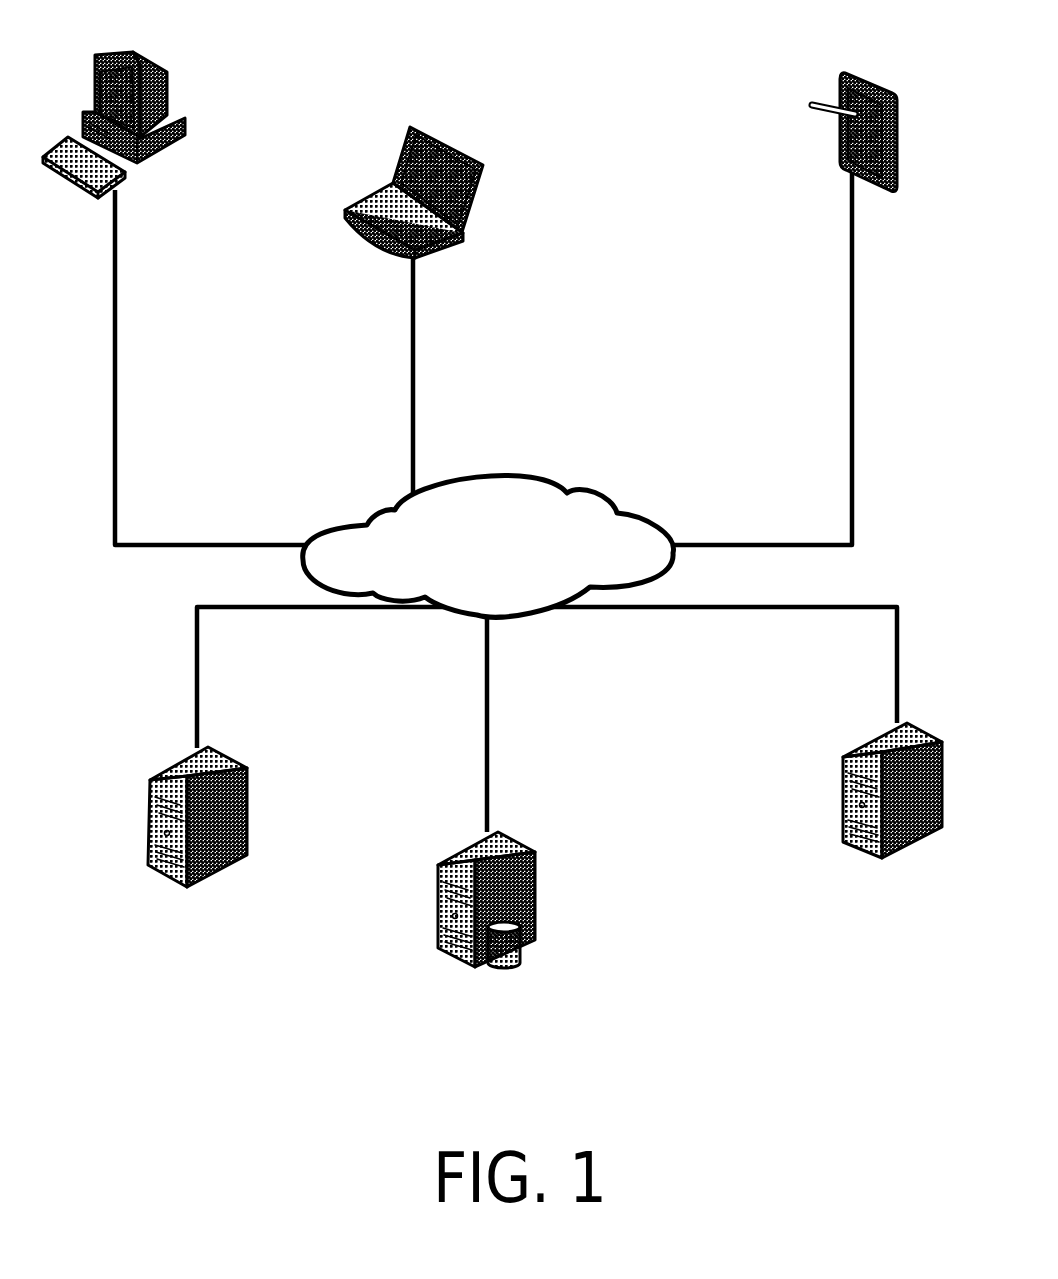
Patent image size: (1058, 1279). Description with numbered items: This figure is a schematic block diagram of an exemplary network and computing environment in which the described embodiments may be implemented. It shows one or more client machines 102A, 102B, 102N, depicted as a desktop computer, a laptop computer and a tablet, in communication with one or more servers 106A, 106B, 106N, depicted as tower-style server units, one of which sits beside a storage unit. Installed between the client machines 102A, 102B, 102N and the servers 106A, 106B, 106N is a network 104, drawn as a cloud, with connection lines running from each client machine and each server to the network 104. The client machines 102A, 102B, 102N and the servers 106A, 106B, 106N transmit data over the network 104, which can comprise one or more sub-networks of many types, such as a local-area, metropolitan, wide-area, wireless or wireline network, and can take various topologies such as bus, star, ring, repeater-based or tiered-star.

The client machine 102A is at (163, 70).
The client machine 102B is at (447, 142).
The client machine 102N is at (862, 88).
The network 104 is at (488, 546).
The server 106A is at (190, 887).
The server 106B is at (475, 970).
The server 106N is at (908, 843).